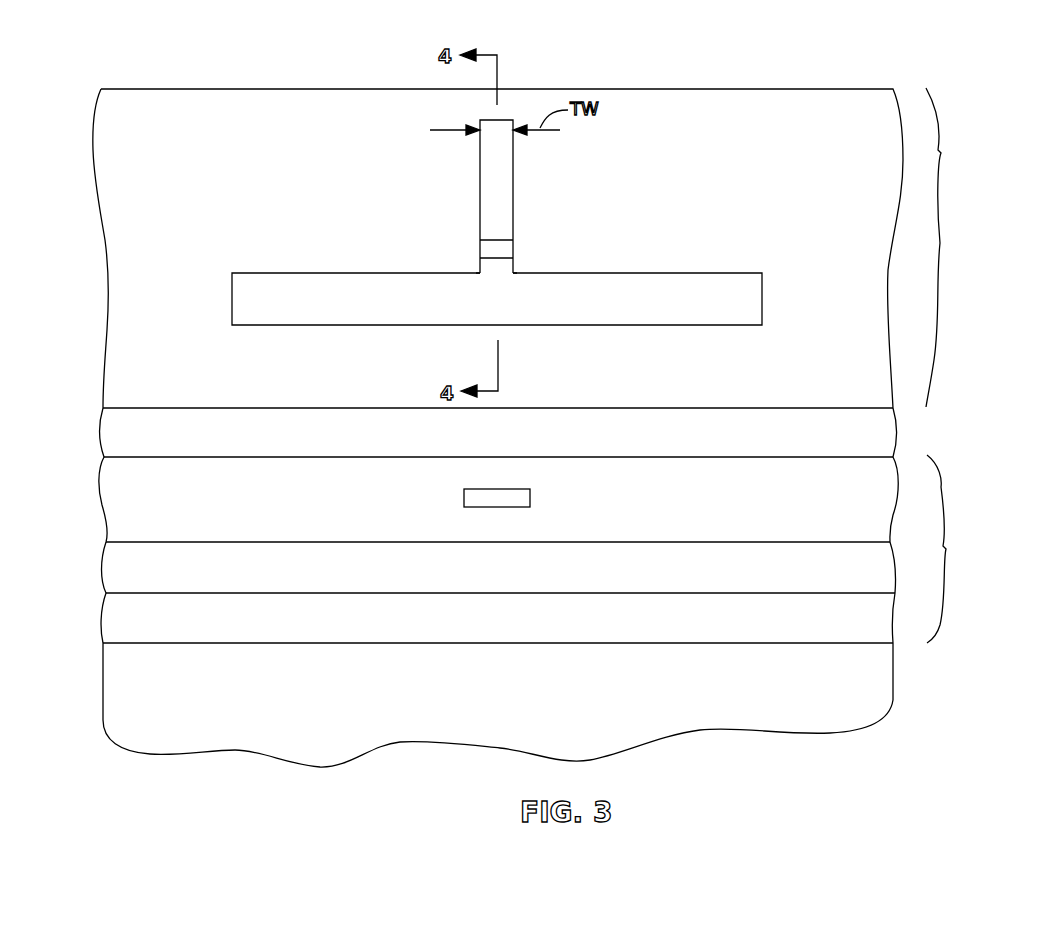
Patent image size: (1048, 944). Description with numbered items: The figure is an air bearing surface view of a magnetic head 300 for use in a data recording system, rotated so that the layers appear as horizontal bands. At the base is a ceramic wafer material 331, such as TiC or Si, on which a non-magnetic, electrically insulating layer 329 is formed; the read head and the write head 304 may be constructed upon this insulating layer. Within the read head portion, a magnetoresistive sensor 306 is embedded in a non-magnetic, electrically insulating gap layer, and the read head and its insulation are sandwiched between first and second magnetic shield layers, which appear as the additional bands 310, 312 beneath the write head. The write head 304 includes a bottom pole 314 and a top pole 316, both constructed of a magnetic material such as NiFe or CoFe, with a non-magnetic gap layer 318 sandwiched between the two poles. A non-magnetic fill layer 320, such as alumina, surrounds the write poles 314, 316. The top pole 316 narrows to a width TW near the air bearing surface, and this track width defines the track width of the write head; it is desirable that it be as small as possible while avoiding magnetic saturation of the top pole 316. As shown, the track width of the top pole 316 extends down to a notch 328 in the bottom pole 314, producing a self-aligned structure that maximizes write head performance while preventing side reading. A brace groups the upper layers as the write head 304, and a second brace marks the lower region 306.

The magnetic head 300 is at (642, 72).
The write head 304 is at (941, 156).
The magnetoresistive sensor 306 is at (522, 498).
The lower cladding layer 310 is at (543, 562).
The cladding layer 312 is at (557, 431).
The bottom pole 314 is at (618, 303).
The top pole 316 is at (497, 150).
The non-magnetic gap layer 318 is at (505, 251).
The non-magnetic fill layer 320 is at (724, 150).
The notch 328 is at (476, 268).
The non-magnetic, electrically insulating layer 329 is at (548, 612).
The ceramic wafer material 331 is at (556, 689).